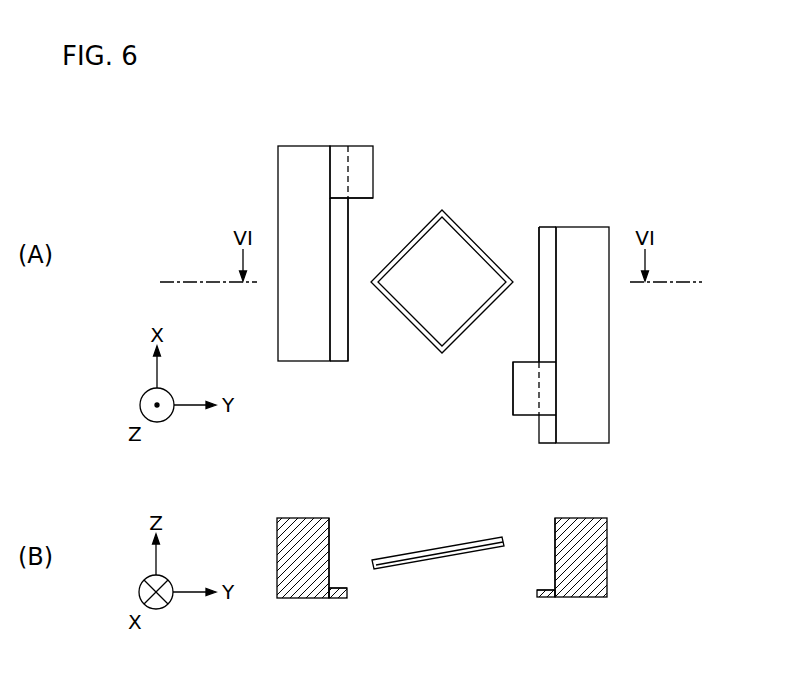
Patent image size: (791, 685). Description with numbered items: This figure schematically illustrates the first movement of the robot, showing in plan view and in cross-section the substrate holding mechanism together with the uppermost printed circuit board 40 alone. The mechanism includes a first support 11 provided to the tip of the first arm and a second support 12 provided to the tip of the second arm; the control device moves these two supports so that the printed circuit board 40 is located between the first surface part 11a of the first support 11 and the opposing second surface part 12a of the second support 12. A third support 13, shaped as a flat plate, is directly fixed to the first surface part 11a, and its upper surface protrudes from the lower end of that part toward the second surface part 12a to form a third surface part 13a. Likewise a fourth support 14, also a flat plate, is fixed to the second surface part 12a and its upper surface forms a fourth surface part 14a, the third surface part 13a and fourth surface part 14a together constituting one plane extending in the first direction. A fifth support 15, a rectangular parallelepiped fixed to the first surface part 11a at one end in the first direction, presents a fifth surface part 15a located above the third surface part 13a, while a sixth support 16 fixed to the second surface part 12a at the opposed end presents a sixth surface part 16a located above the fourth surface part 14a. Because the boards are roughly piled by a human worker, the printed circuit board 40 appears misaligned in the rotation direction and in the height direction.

The first support 11 is at (590, 220).
The first surface part 11a is at (548, 313).
The second support 12 is at (302, 143).
The second surface part 12a is at (334, 311).
The third support 13 is at (542, 227).
The third surface part 13a is at (542, 258).
The fourth support 14 is at (338, 363).
The fourth surface part 14a is at (342, 335).
The fifth support 15 is at (512, 395).
The fifth surface part 15a is at (512, 350).
The sixth support 16 is at (355, 143).
The sixth surface part 16a is at (362, 209).
The printed circuit board 40 is at (482, 247).